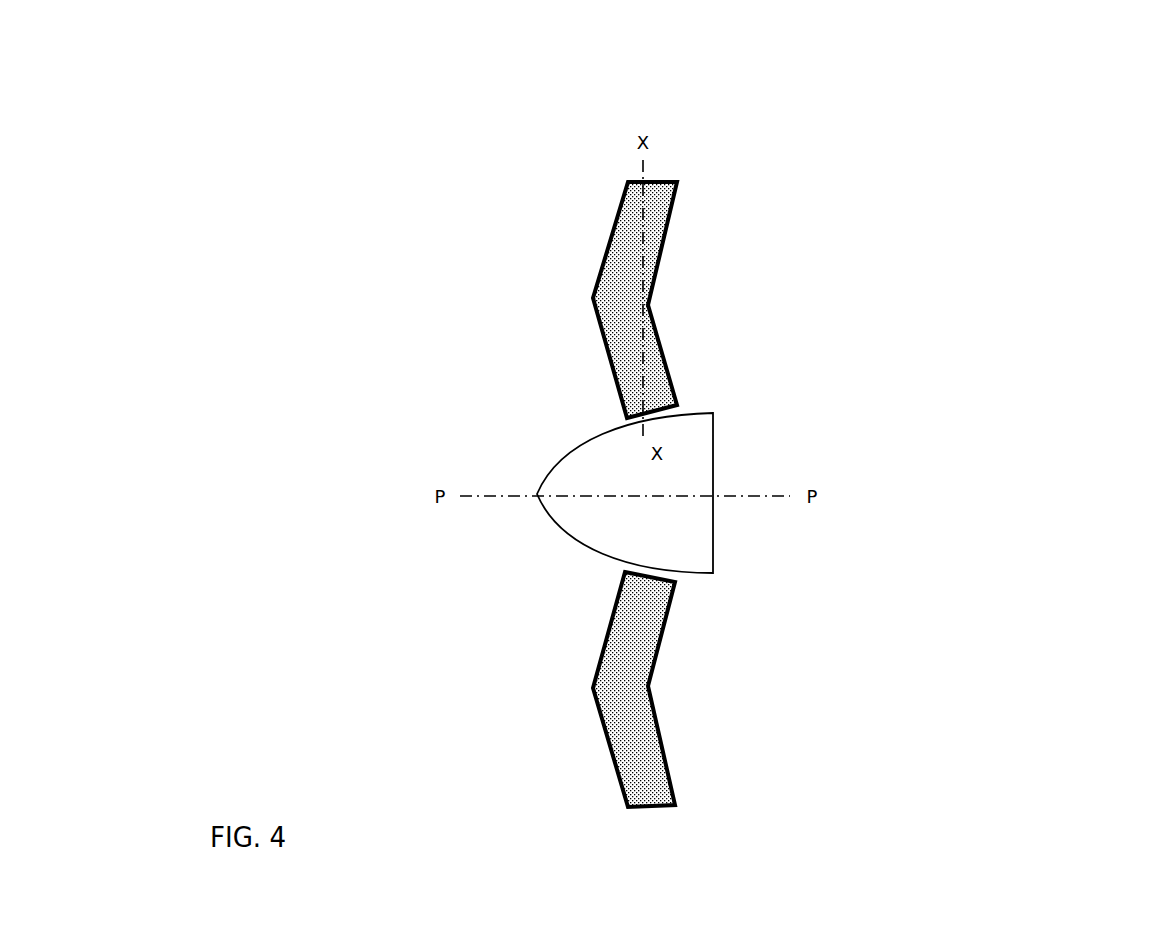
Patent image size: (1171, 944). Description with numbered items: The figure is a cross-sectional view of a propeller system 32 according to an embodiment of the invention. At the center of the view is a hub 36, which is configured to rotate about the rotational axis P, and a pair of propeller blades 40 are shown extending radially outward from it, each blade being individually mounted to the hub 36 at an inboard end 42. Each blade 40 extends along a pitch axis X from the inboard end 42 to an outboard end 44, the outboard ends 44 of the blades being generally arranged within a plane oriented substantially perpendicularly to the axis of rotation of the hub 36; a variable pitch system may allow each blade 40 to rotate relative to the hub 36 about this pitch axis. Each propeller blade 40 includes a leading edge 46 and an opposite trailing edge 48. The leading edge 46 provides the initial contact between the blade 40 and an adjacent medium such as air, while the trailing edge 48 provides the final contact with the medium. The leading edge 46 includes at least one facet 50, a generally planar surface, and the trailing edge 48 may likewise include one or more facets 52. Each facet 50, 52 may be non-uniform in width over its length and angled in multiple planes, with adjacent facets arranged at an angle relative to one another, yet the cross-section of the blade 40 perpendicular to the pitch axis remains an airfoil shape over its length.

The propeller system 32 is at (997, 146).
The hub 36 is at (573, 452).
The propeller blade 40 is at (622, 263).
The inboard end 42 is at (676, 398).
The outboard end 44 is at (670, 181).
The leading edge 46 is at (590, 292).
The trailing edge 48 is at (650, 317).
The facet 50 is at (617, 212).
The facet 52 is at (663, 242).